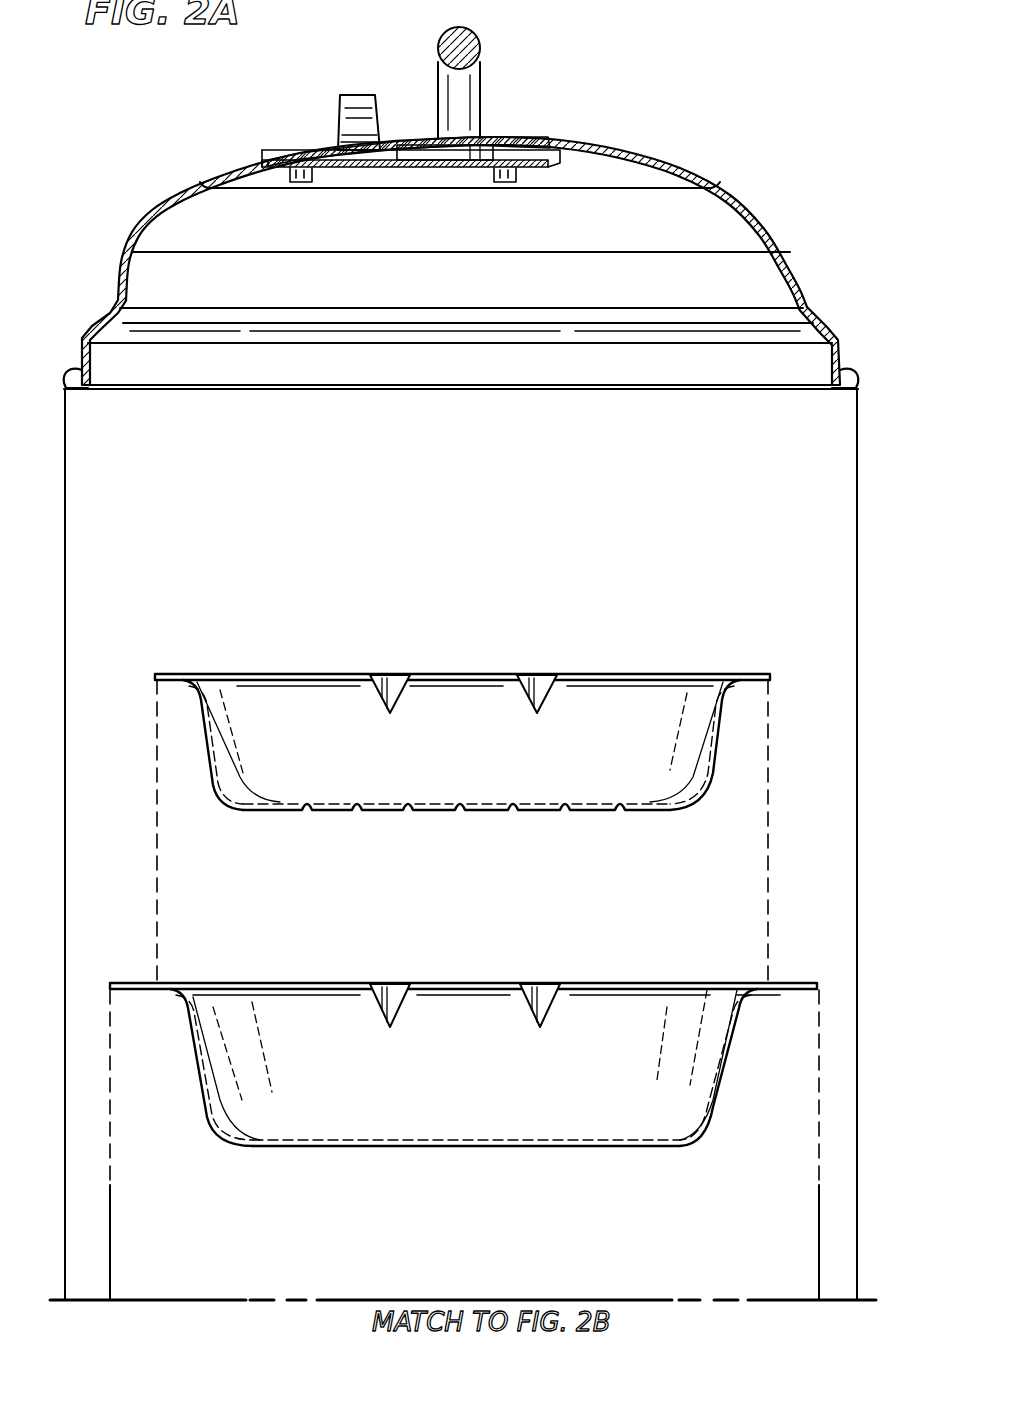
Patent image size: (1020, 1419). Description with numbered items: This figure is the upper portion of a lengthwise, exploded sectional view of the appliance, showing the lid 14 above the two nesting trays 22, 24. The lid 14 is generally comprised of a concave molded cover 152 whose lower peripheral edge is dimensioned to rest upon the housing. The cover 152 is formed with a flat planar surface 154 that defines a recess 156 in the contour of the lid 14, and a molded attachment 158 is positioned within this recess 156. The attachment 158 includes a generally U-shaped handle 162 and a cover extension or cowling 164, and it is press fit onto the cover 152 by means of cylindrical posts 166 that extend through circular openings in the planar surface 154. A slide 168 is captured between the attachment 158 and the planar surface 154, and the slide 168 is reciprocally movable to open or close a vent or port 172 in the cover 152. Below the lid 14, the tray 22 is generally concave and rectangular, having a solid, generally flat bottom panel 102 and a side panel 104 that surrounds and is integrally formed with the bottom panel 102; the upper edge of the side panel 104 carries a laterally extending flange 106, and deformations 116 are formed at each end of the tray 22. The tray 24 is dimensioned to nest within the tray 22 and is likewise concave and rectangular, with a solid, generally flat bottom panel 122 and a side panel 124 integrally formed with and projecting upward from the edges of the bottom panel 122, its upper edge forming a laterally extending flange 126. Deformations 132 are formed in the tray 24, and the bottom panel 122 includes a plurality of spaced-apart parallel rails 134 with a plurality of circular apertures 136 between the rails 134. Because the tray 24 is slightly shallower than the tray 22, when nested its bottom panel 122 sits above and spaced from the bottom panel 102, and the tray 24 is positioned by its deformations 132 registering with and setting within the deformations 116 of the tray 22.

The lid 14 is at (461, 204).
The tray 22 is at (460, 1048).
The tray 24 is at (456, 734).
The bottom panel 102 is at (455, 1138).
The side panel 104 is at (205, 1078).
The flange 106 is at (143, 935).
The deformations 116 is at (398, 978).
The bottom panel 122 is at (405, 814).
The side panel 124 is at (210, 752).
The flange 126 is at (163, 670).
The deformations 132 is at (392, 668).
The rails 134 is at (307, 800).
The circular apertures 136 is at (410, 800).
The cover 152 is at (655, 148).
The planar surface 154 is at (445, 170).
The recess 156 is at (472, 150).
The attachment 158 is at (303, 136).
The handle 162 is at (478, 56).
The cowling 164 is at (418, 136).
The cylindrical posts 166 is at (305, 183).
The slide 168 is at (356, 102).
The vent 172 is at (362, 169).